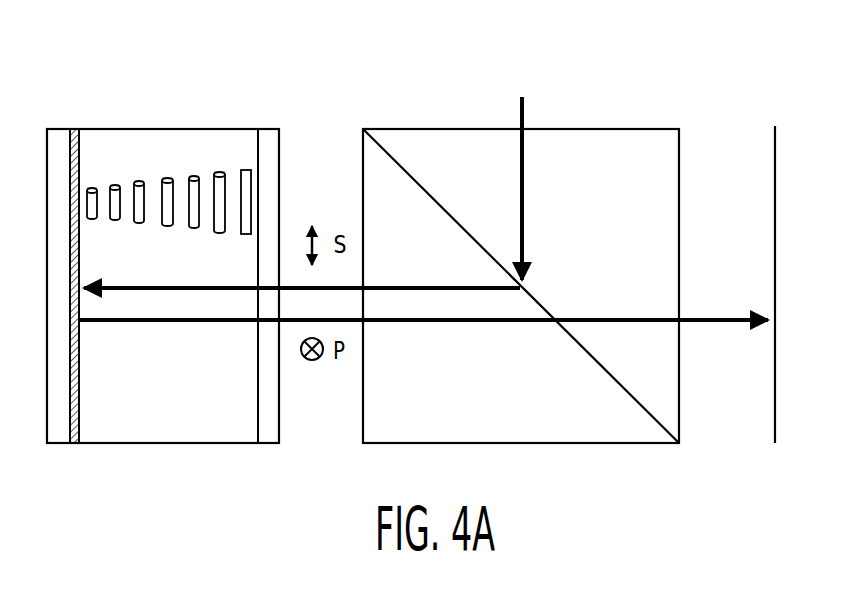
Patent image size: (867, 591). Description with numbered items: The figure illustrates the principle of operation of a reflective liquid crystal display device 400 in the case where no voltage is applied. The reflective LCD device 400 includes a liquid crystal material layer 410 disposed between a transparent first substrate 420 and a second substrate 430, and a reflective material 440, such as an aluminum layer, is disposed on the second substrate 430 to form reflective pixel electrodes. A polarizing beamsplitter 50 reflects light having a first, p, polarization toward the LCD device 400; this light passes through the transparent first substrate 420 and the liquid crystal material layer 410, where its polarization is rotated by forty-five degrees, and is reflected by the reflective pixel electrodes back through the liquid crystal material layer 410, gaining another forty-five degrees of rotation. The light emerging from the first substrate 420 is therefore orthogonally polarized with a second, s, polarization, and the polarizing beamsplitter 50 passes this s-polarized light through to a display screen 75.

The reflective liquid crystal display device 400 is at (157, 73).
The liquid crystal material layer 410 is at (205, 128).
The first substrate 420 is at (272, 128).
The second substrate 430 is at (60, 128).
The reflective material 440 is at (75, 128).
The polarizing beamsplitter 50 is at (460, 116).
The display screen 75 is at (775, 122).